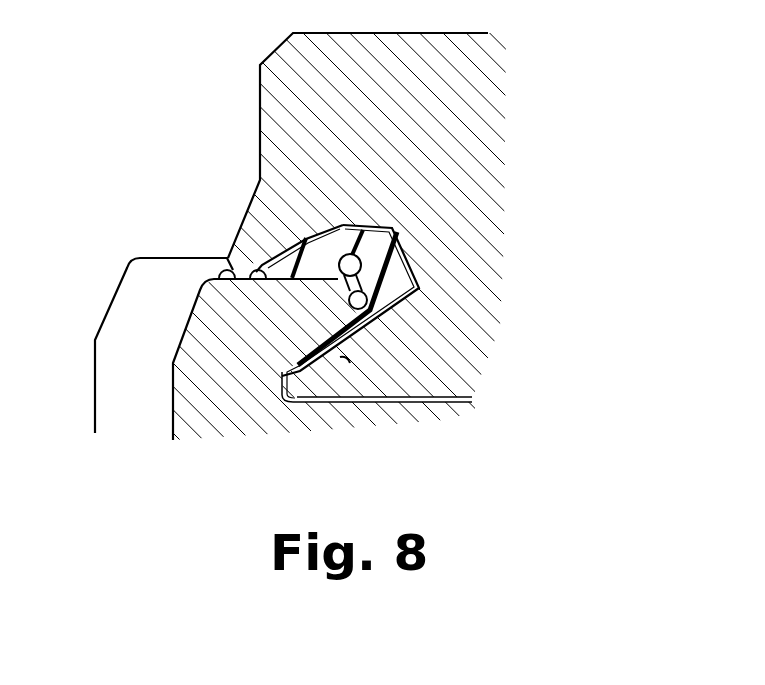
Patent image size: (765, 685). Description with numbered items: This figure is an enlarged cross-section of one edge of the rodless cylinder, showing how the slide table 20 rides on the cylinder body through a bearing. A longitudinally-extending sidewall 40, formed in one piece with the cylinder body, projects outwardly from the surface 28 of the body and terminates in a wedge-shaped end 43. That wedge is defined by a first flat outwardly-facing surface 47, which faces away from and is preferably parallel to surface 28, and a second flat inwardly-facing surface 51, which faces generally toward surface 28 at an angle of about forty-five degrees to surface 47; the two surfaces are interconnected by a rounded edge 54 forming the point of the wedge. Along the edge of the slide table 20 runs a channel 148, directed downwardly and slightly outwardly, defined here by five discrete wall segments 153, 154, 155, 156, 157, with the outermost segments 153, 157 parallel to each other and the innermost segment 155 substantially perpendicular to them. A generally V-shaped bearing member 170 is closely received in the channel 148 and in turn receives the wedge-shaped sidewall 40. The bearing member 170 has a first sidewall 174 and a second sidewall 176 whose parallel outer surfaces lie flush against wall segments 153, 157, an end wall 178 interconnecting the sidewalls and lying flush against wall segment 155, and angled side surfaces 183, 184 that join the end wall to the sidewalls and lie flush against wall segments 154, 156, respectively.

The slide table 20 is at (260, 100).
The surface of the cylinder body 28 is at (284, 392).
The sidewall 40 is at (207, 318).
The wedge-shaped end 43 is at (280, 256).
The outwardly-facing surface 47 is at (226, 262).
The inwardly-facing surface 51 is at (398, 345).
The rounded edge 54 is at (400, 237).
The channel 148 is at (346, 223).
The wall segment 153 is at (304, 242).
The wall segment 154 is at (405, 228).
The wall segment 155 is at (412, 240).
The wall segment 156 is at (420, 297).
The wall segment 157 is at (340, 362).
The bearing member 170 is at (405, 277).
The first sidewall 174 is at (324, 238).
The second sidewall 176 is at (348, 350).
The end wall 178 is at (397, 222).
The angled side surface 183 is at (355, 220).
The angled side surface 184 is at (408, 347).